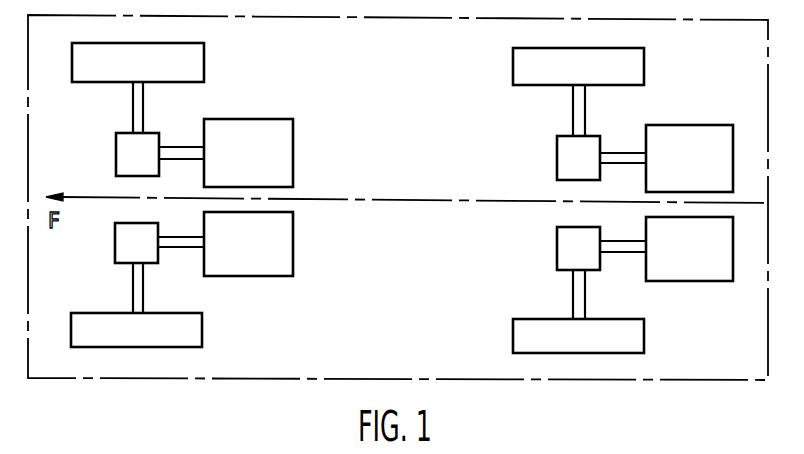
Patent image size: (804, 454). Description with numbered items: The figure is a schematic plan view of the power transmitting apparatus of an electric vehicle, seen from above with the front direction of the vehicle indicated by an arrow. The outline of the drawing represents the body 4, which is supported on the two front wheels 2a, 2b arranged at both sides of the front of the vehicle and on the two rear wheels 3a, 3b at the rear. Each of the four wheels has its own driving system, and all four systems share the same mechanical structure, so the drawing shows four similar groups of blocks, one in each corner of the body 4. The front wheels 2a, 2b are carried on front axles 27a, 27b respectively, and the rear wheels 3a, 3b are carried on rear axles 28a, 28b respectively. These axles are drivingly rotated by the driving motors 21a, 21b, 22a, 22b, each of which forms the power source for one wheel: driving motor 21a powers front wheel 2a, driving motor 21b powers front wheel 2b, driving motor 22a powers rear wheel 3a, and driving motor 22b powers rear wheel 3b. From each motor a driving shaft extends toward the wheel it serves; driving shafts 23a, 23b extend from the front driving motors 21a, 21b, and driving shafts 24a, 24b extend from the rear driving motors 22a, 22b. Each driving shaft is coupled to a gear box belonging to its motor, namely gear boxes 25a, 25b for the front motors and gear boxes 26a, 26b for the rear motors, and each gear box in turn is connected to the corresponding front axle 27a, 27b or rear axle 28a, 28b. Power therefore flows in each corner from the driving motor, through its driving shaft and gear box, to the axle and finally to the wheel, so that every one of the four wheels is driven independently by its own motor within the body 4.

The body 4 is at (90, 378).
The front wheel 2a is at (204, 56).
The front wheel 2b is at (198, 339).
The rear wheel 3a is at (513, 65).
The rear wheel 3b is at (644, 342).
The driving motor 21a is at (262, 129).
The driving motor 21b is at (268, 268).
The driving motor 22a is at (697, 131).
The driving motor 22b is at (708, 276).
The driving shaft 23a is at (178, 153).
The driving shaft 23b is at (178, 247).
The driving shaft 24a is at (618, 155).
The driving shaft 24b is at (620, 252).
The gear box 25a is at (120, 150).
The gear box 25b is at (116, 243).
The gear box 26a is at (557, 158).
The gear box 26b is at (557, 248).
The front axle 27a is at (133, 110).
The front axle 27b is at (133, 288).
The rear axle 28a is at (573, 116).
The rear axle 28b is at (573, 296).